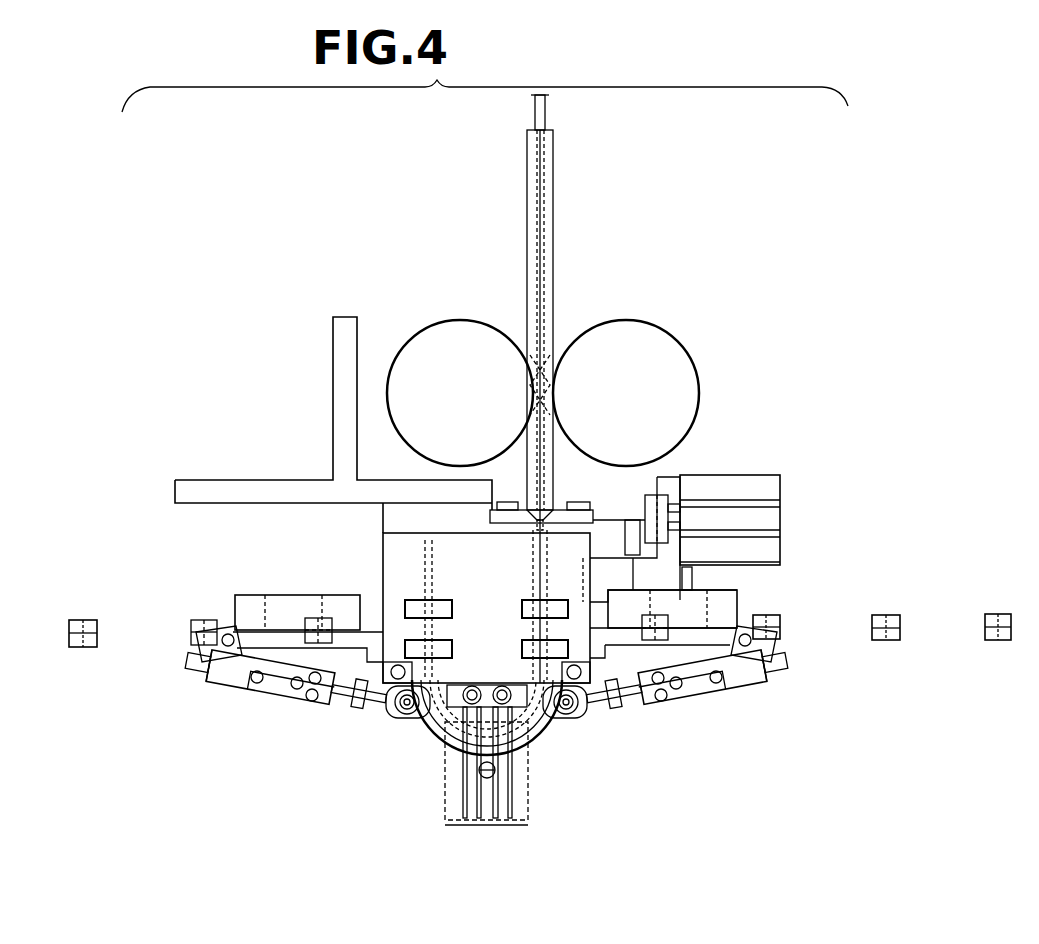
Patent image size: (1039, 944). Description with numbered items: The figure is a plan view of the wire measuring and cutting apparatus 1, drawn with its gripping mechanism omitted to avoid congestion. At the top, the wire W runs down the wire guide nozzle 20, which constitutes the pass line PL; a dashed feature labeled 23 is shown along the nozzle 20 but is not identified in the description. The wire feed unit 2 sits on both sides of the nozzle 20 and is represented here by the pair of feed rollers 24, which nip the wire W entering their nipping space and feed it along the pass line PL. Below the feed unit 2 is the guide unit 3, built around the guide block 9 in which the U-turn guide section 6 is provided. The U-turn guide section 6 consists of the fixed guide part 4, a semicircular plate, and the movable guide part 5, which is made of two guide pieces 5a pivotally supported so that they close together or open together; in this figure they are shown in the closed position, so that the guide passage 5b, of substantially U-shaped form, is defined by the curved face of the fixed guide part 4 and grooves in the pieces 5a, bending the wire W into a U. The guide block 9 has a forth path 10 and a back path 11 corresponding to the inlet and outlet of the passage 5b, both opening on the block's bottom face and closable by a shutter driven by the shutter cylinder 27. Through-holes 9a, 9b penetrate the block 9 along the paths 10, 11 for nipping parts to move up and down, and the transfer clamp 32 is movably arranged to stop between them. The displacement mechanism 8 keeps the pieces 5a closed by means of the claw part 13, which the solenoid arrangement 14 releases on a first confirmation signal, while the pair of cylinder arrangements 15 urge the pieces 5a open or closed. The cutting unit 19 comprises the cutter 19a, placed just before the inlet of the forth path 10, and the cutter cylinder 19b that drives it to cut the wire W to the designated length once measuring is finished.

The wire measuring and cutting apparatus 1 is at (800, 222).
The wire feed unit 2 is at (702, 248).
The guide unit 3 is at (388, 802).
The fixed guide part 4 is at (436, 722).
The movable guide part 5 is at (432, 741).
The guide pieces 5a is at (442, 748).
The guide passage 5b is at (545, 726).
The U-turn guide section 6 is at (467, 732).
The displacement mechanism 8 is at (486, 755).
The guide block 9 is at (383, 553).
The through-holes 9a is at (452, 610).
The through-holes 9b is at (452, 650).
The forth path 10 is at (536, 580).
The back path 11 is at (434, 570).
The claw part 13 is at (487, 779).
The solenoid arrangement 14 is at (528, 800).
The cylinder arrangements 15 is at (306, 698).
The cutting unit 19 is at (697, 497).
The cutter 19a is at (612, 518).
The cutter cylinder 19b is at (745, 476).
The wire guide nozzle 20 is at (553, 153).
The wire insertion hole 23 is at (527, 214).
The feed rollers 24 is at (436, 327).
The shutter cylinder 27 is at (233, 598).
The transfer clamp 32 is at (886, 640).
The pass line PL is at (540, 190).
The wire W is at (553, 252).